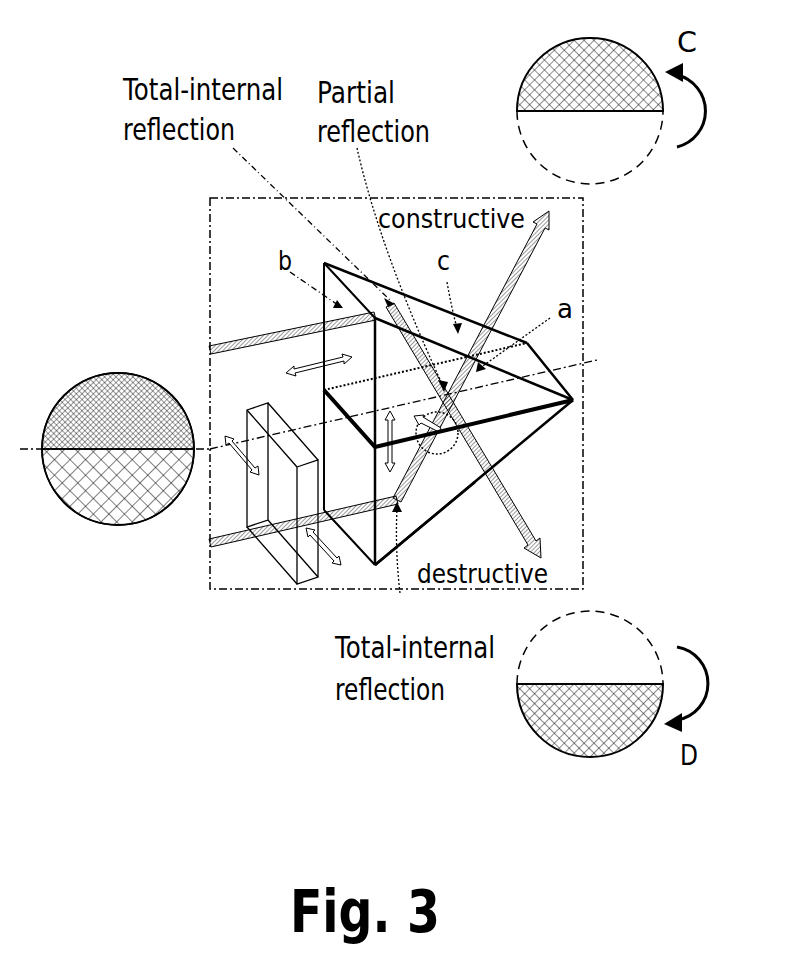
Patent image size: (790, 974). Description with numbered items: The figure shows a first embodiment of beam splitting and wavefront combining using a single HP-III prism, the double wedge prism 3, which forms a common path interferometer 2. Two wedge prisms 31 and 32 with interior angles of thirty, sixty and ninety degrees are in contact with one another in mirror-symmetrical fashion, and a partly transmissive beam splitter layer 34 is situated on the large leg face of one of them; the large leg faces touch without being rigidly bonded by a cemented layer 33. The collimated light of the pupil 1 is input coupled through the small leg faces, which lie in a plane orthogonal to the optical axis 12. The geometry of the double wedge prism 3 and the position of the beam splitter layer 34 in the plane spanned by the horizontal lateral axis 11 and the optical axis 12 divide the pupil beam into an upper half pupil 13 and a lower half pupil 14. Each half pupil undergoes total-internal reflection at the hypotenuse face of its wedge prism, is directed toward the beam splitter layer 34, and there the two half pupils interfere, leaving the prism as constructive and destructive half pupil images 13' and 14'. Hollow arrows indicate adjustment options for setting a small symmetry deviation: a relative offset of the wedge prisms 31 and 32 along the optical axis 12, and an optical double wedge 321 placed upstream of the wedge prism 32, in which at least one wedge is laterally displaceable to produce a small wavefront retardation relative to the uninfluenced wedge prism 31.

The pupil 1 is at (110, 444).
The lateral axis (x-axis) 11 is at (25, 452).
The optical axis 12 is at (597, 360).
The half pupil 13 is at (118, 354).
The half pupil 14 is at (118, 543).
The half pupil image 13' is at (557, 107).
The half pupil image 14' is at (563, 698).
The common path interferometer 2 is at (585, 250).
The HP-III prism (double wedge prism) 3 is at (523, 419).
The wedge prism 31 is at (577, 395).
The wedge prism 32 is at (540, 422).
The cemented layer 33 is at (505, 418).
The partly transmissive beam splitter layer (neutral splitter layer) 34 is at (503, 428).
The optical double wedge 321 is at (292, 565).